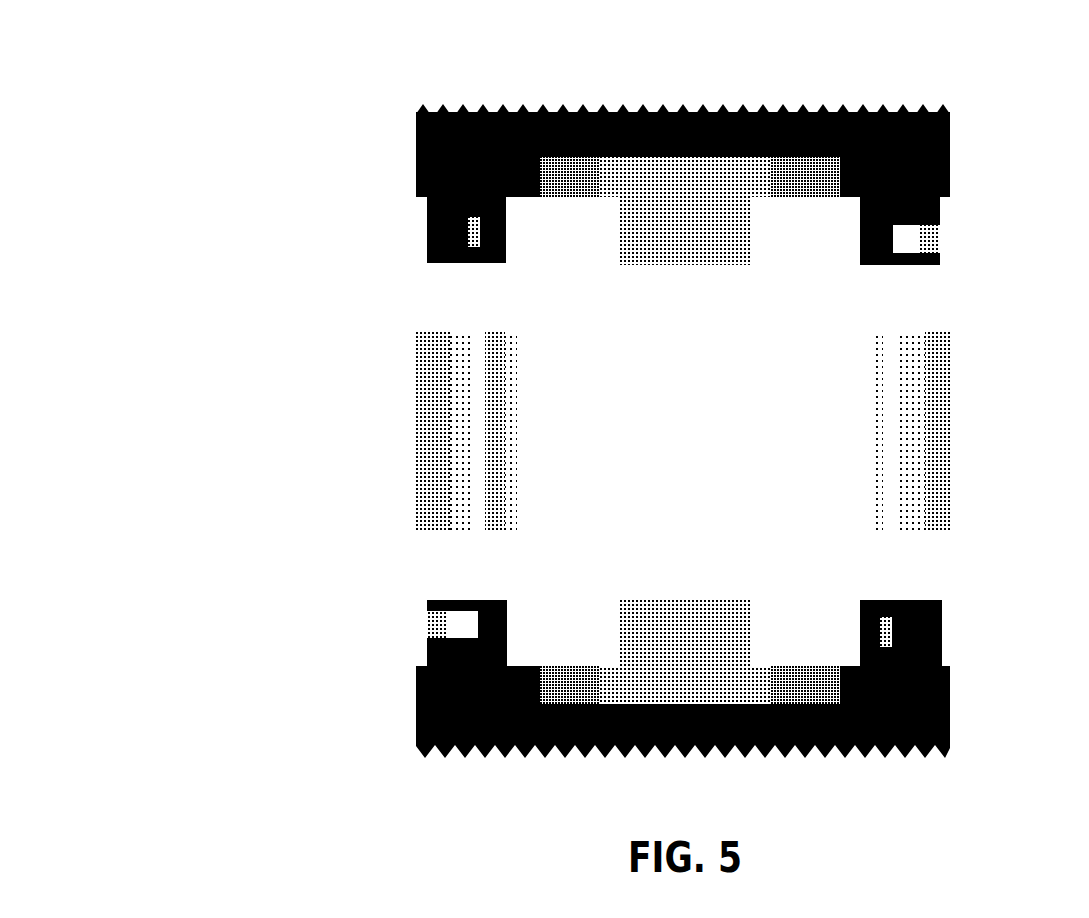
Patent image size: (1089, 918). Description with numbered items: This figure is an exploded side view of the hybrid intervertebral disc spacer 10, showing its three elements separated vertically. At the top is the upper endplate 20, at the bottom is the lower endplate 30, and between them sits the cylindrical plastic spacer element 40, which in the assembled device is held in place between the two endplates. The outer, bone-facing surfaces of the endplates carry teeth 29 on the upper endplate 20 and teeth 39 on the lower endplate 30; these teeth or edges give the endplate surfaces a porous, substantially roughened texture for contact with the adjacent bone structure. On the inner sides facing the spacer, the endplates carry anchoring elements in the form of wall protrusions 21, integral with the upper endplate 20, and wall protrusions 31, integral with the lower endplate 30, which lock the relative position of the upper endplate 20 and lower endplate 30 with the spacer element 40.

The disc spacer 10 is at (267, 127).
The upper endplate 20 is at (510, 128).
The wall protrusions 21 is at (427, 255).
The teeth 29 is at (680, 120).
The lower endplate 30 is at (925, 692).
The wall protrusions 31 is at (430, 602).
The teeth 39 is at (807, 755).
The plastic spacer element 40 is at (443, 402).